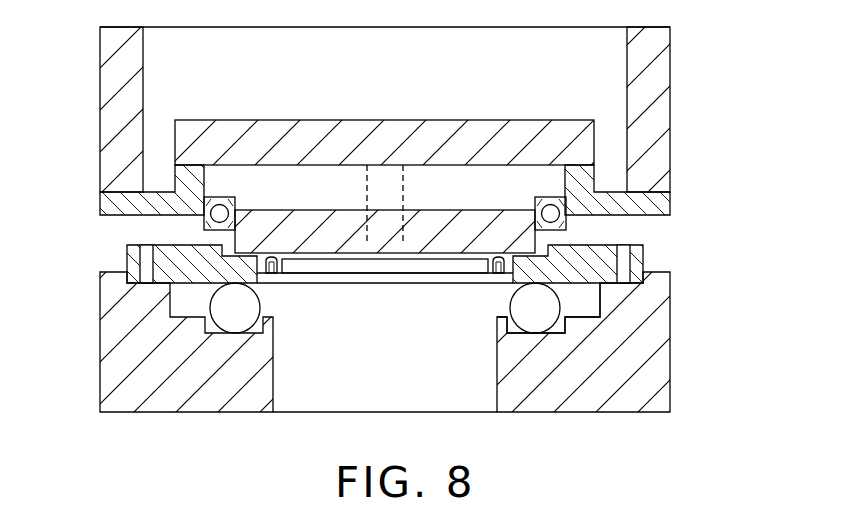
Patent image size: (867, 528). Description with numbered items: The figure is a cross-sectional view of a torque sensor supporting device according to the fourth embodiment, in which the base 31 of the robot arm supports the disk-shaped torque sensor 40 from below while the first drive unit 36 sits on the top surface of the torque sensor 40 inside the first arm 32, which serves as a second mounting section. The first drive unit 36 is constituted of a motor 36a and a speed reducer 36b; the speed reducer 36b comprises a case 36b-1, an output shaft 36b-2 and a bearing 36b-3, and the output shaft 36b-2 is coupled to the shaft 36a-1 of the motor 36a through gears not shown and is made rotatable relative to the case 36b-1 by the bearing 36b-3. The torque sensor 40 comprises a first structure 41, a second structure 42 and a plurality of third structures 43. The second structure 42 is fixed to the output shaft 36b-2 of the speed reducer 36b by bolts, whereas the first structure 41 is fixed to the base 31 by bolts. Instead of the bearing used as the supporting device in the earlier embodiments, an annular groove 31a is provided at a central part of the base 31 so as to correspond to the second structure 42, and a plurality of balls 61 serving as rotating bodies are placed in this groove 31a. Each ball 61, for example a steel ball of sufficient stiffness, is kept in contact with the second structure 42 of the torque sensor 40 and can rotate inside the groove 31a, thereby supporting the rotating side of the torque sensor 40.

The base 31 is at (385, 370).
The groove 31a is at (498, 341).
The first arm 32 is at (662, 70).
The first drive unit 36 is at (396, 178).
The motor 36a is at (457, 160).
The shaft 36a-1 is at (413, 185).
The speed reducer 36b is at (375, 222).
The case 36b-1 is at (100, 203).
The output shaft 36b-2 is at (235, 249).
The bearing 36b-3 is at (204, 222).
The torque sensor 40 is at (454, 306).
The first structure 41 is at (603, 263).
The second structure 42 is at (560, 268).
The third structures 43 is at (530, 262).
The ball 61 is at (249, 305).